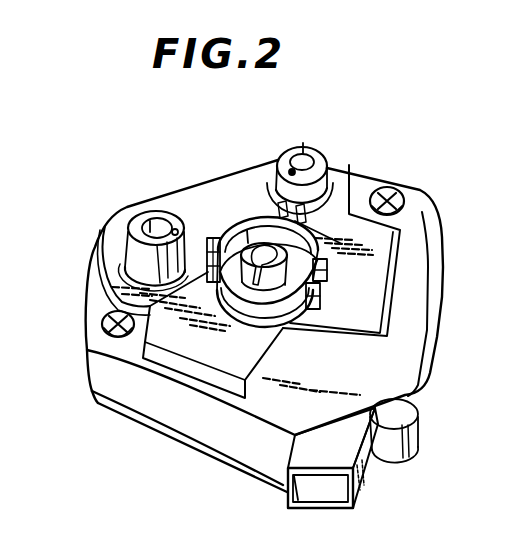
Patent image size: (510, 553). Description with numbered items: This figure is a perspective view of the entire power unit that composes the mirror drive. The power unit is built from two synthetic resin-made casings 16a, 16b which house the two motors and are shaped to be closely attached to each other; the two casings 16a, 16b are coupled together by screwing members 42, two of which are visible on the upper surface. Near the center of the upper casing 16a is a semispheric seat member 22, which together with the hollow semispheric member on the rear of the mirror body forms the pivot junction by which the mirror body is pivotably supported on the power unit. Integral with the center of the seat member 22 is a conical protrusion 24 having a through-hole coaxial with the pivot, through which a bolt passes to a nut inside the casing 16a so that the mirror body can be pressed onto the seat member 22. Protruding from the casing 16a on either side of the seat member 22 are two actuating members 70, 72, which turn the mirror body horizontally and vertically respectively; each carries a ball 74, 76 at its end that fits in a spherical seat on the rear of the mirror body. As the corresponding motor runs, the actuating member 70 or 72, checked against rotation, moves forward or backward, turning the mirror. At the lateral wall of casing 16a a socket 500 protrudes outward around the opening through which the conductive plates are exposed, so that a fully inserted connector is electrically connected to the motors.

The actuating member 70 is at (327, 151).
The casing 16a is at (207, 390).
The casing 16b is at (228, 463).
The ball 74 is at (150, 227).
The actuating member 72 is at (173, 212).
The semispheric seat member 22 is at (239, 216).
The conical protrusion 24 is at (318, 260).
The ball 76 is at (303, 143).
The screwing member 42 is at (405, 202).
The socket 500 is at (366, 476).